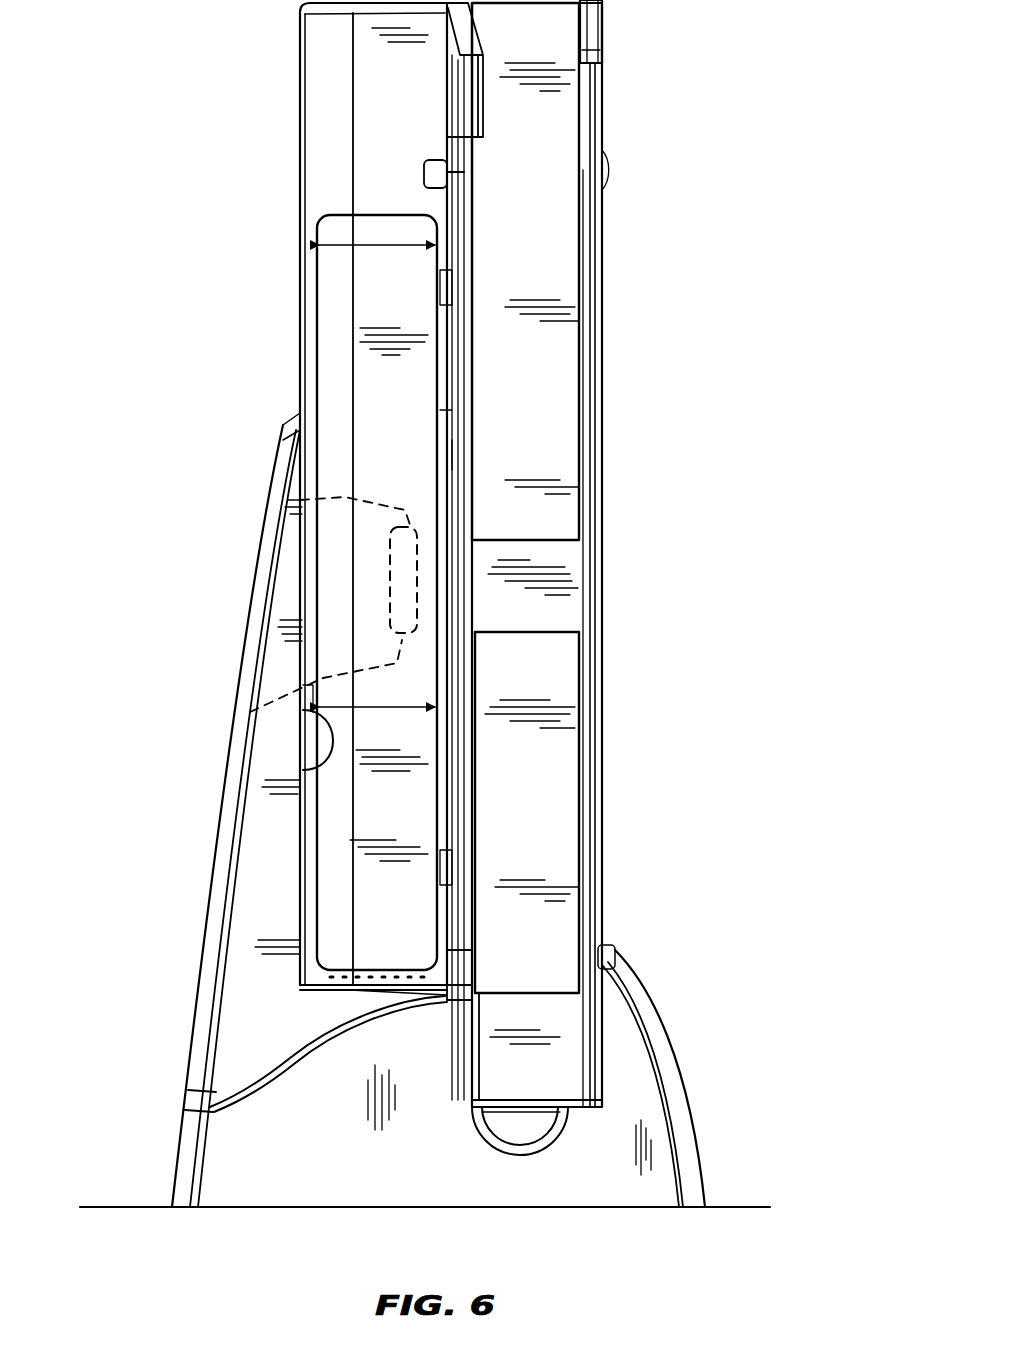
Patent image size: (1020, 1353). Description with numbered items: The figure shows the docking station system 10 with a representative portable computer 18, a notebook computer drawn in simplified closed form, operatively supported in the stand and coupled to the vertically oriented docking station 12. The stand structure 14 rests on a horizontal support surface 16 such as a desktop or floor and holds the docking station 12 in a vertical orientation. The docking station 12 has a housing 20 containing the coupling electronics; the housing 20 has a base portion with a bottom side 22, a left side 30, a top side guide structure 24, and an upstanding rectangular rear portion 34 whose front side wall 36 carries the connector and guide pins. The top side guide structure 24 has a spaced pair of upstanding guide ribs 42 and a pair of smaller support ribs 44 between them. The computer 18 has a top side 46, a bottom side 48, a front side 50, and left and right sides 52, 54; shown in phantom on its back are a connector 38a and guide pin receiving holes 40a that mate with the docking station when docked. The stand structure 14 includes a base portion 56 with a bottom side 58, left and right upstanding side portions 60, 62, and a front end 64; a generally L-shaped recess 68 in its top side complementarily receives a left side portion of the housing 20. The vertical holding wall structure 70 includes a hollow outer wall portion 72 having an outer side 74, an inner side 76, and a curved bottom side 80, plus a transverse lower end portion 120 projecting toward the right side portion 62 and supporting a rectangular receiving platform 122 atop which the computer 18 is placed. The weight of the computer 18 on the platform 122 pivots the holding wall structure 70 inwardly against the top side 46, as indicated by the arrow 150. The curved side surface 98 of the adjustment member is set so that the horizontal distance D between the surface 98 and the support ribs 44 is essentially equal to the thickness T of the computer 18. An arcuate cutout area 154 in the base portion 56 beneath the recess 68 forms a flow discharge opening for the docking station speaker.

The docking station system 10 is at (745, 392).
The docking station 12 is at (615, 512).
The stand structure 14 is at (690, 1030).
The horizontal support surface 16 is at (760, 1204).
The portable computer 18 is at (296, 302).
The housing 20 is at (602, 588).
The bottom side 22 is at (592, 692).
The top side guide structure 24 is at (432, 417).
The left side 30 is at (528, 1115).
The upstanding rectangular rear portion 34 is at (310, 75).
The front side wall 36 is at (412, 116).
The connector 38a is at (392, 583).
The guide pin receiving holes 40a is at (300, 500).
The guide ribs 42 is at (428, 170).
The support ribs 44 is at (455, 278).
The top side 46 is at (320, 353).
The bottom side 48 is at (458, 455).
The front side 50 is at (410, 811).
The left side 52 is at (337, 996).
The right side 54 is at (380, 212).
The base portion 56 is at (693, 1075).
The bottom side 58 is at (615, 1210).
The left upstanding side portion 60 is at (174, 1182).
The right upstanding side portion 62 is at (702, 1137).
The front end 64 is at (336, 1176).
The L-shaped recess 68 is at (583, 1099).
The vertical holding wall structure 70 is at (207, 843).
The outer wall portion 72 is at (224, 917).
The outer side 74 is at (190, 984).
The inner side 76 is at (308, 875).
The curved bottom side 80 is at (315, 1075).
The outwardly curved outer side surface 98 is at (303, 768).
The transverse lower end portion 120 is at (365, 1003).
The receiving platform 122 is at (406, 965).
The arrow 150 is at (172, 795).
The arcuate cutout area 154 is at (528, 1130).
The thickness T is at (390, 250).
The horizontal distance D is at (392, 710).